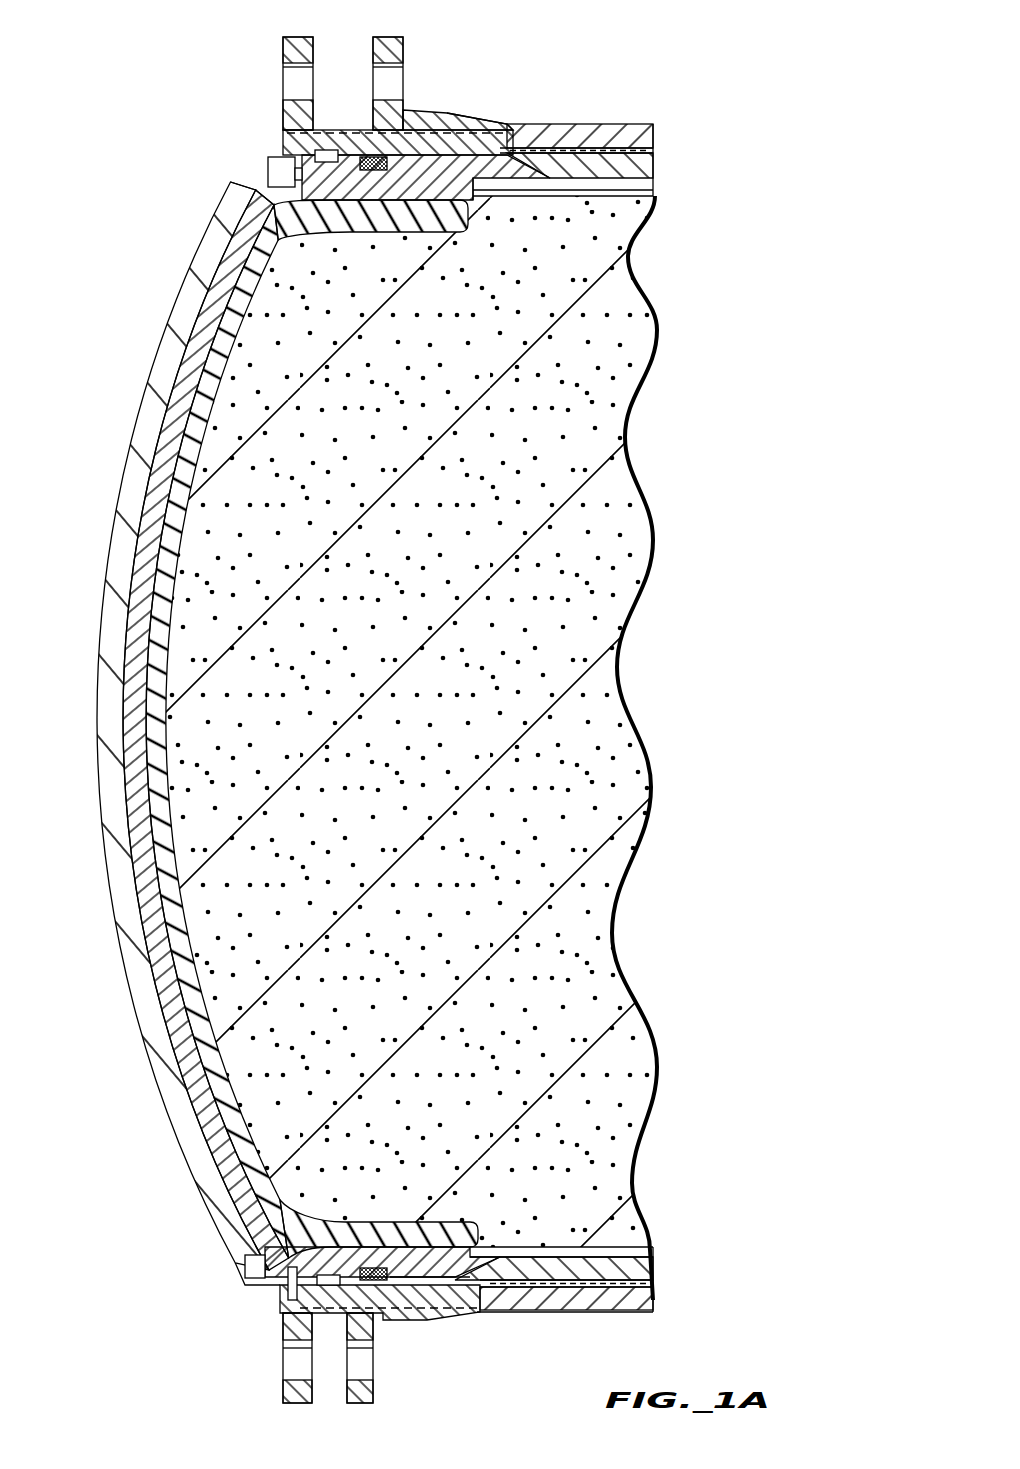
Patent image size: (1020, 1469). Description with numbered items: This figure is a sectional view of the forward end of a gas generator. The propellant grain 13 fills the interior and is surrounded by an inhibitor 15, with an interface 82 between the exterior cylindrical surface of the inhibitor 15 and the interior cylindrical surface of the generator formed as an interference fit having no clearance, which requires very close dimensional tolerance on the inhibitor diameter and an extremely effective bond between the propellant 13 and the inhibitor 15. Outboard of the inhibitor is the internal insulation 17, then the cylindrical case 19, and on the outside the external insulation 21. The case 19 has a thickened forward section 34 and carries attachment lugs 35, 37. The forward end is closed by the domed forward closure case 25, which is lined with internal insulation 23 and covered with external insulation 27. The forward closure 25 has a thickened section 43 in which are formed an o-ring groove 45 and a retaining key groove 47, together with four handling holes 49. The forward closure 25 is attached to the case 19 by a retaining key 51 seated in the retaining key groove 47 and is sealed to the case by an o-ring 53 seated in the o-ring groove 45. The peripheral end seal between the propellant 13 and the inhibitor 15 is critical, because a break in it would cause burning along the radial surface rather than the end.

The propellant grain 13 is at (630, 360).
The inhibitor 15 is at (660, 185).
The internal insulation 17 is at (656, 160).
The case 19 is at (597, 150).
The external insulation 21 is at (532, 123).
The internal insulation 23 is at (228, 328).
The forward closure case 25 is at (160, 402).
The external insulation 27 is at (117, 570).
The thickened forward section 34 is at (482, 127).
The attachment lug 35 is at (283, 1394).
The attachment lug 37 is at (283, 58).
The thickened section 43 is at (262, 230).
The o-ring groove 45 is at (363, 157).
The retaining key groove 47 is at (317, 133).
The handling holes 49 is at (268, 173).
The retaining key 51 is at (327, 143).
The o-ring 53 is at (401, 112).
The interface 82 is at (645, 185).